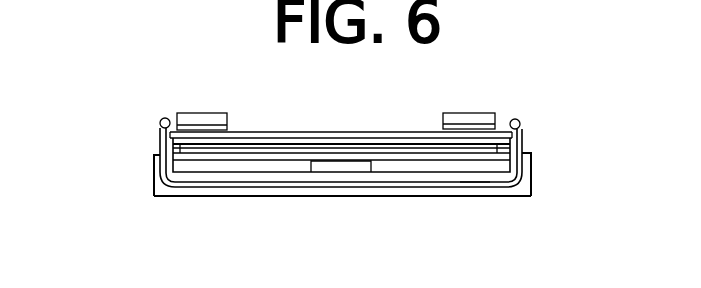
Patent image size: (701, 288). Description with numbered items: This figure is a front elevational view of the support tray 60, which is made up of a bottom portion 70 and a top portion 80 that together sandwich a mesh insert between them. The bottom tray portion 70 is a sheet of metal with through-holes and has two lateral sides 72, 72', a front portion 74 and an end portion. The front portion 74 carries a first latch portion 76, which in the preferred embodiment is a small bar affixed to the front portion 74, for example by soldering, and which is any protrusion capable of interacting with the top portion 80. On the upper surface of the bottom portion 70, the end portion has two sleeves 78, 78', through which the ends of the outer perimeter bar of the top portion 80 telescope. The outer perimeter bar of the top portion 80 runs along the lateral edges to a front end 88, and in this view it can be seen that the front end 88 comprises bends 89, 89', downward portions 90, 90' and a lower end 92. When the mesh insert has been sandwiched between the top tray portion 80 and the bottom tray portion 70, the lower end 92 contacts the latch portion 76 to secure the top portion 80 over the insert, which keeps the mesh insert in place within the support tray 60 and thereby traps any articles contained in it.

The support tray 60 is at (339, 204).
The bottom portion 70 is at (207, 200).
The lateral side 72 is at (554, 188).
The lateral side 72' is at (113, 192).
The front portion 74 is at (378, 192).
The first latch portion 76 is at (341, 123).
The sleeve 78 is at (475, 91).
The sleeve 78' is at (190, 93).
The top portion 80 is at (255, 130).
The front end 88 is at (472, 180).
The bend 89 is at (542, 101).
The bend 89' is at (116, 107).
The downward portion 90 is at (470, 152).
The downward portion 90' is at (199, 157).
The lower end 92 is at (283, 183).